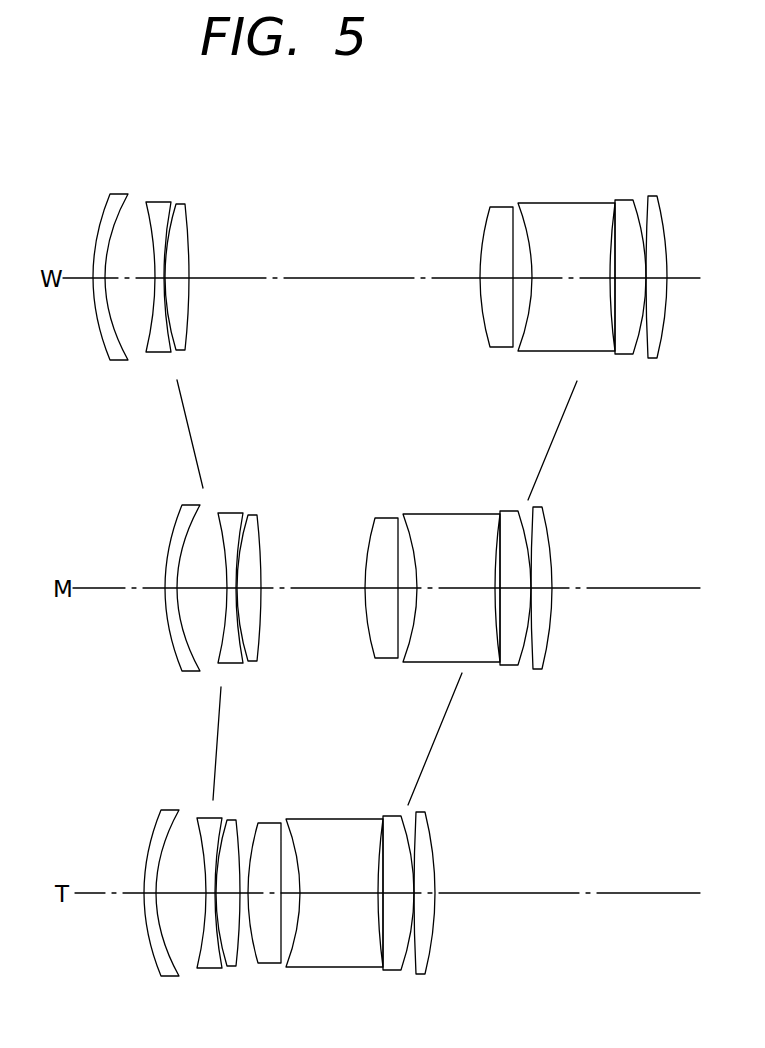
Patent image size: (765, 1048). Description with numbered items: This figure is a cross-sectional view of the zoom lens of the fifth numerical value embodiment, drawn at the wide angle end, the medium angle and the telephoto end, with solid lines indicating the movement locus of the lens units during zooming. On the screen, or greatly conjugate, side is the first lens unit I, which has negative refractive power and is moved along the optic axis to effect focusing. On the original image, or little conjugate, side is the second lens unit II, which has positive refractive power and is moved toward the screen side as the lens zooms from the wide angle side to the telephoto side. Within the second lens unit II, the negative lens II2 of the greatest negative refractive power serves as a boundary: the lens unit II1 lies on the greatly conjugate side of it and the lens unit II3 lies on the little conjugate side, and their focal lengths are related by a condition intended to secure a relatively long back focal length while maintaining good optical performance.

The first lens unit I is at (193, 157).
The second lens unit II is at (678, 132).
The lens unit on the greatly conjugate side II1 is at (503, 173).
The negative lens II2 is at (612, 173).
The lens unit on the little conjugate side II3 is at (667, 173).